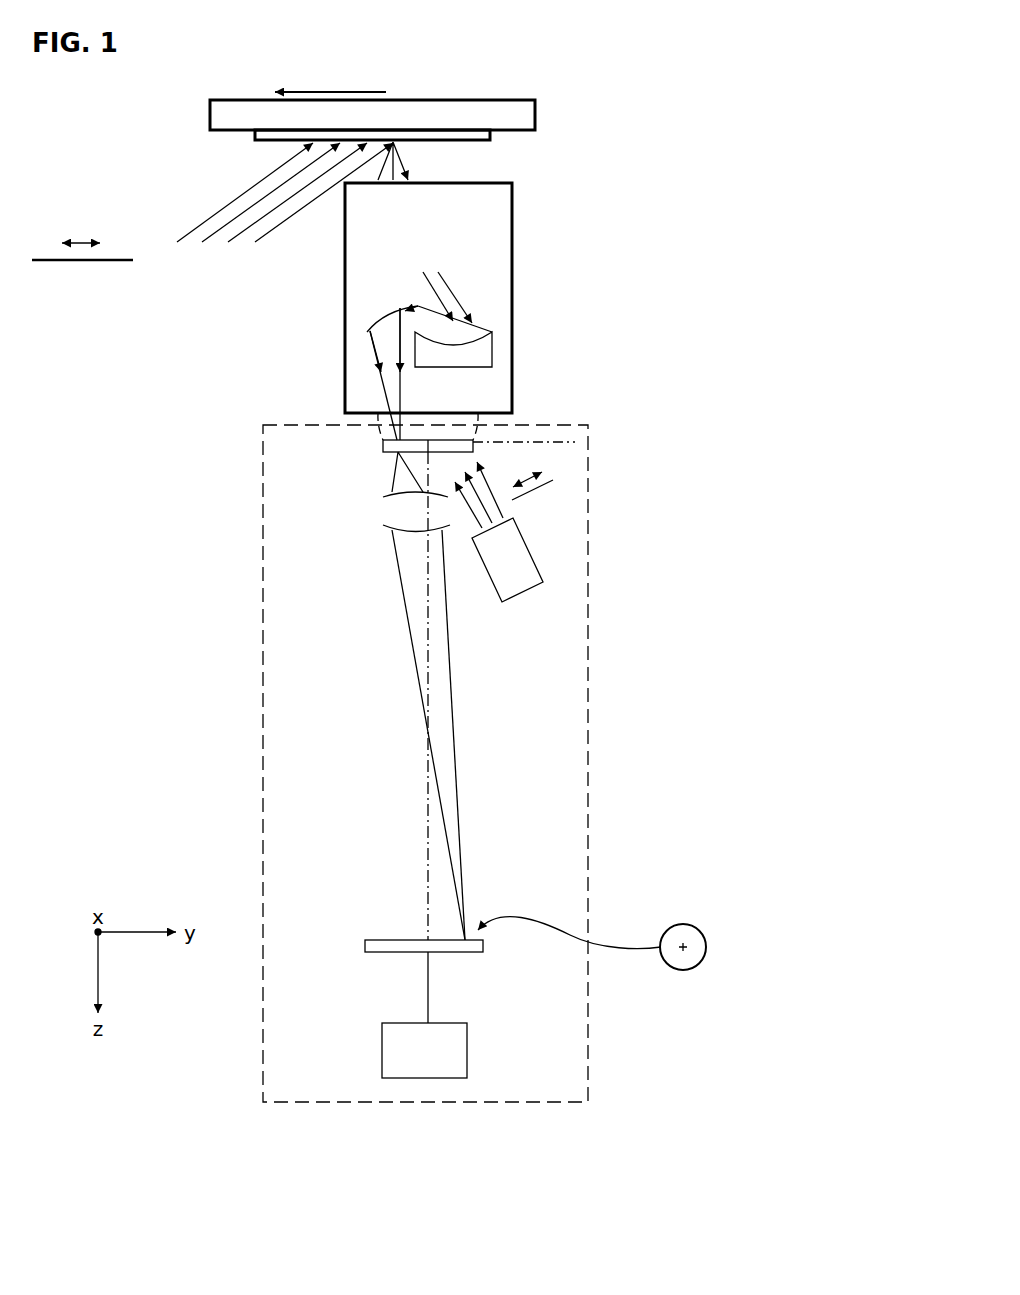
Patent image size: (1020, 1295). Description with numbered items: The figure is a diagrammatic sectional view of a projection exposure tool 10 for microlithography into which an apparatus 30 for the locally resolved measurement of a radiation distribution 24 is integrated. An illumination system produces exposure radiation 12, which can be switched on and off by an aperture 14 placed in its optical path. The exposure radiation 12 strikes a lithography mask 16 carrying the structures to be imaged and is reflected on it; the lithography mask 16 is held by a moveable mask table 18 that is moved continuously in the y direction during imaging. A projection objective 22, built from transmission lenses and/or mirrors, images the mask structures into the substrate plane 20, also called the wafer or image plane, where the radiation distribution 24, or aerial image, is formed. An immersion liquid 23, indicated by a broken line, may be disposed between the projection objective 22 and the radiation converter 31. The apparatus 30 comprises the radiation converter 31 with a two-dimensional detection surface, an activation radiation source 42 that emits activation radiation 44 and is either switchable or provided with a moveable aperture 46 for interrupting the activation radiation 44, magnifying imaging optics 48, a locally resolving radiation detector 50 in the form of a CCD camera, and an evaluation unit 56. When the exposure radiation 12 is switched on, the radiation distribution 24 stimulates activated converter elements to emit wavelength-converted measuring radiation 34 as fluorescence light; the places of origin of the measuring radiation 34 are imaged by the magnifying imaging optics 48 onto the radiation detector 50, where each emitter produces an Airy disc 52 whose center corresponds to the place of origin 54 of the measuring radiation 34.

The projection exposure tool 10 is at (648, 197).
The exposure radiation 12 is at (275, 228).
The aperture 14 is at (85, 262).
The lithography mask 16 is at (490, 138).
The mask table 18 is at (485, 100).
The substrate plane 20 is at (575, 442).
The projection objective 22 is at (512, 287).
The immersion liquid 23 is at (482, 418).
The radiation distribution 24 is at (413, 435).
The apparatus 30 is at (590, 680).
The radiation converter 31 is at (383, 447).
The measuring radiation 34 is at (397, 473).
The activation radiation source 42 is at (523, 540).
The activation radiation 44 is at (483, 475).
The moveable aperture 46 is at (533, 488).
The magnifying imaging optics 48 is at (383, 514).
The radiation detector 50 is at (370, 940).
The Airy disc 52 is at (699, 921).
The place of origin 54 is at (685, 949).
The evaluation unit 56 is at (392, 1050).